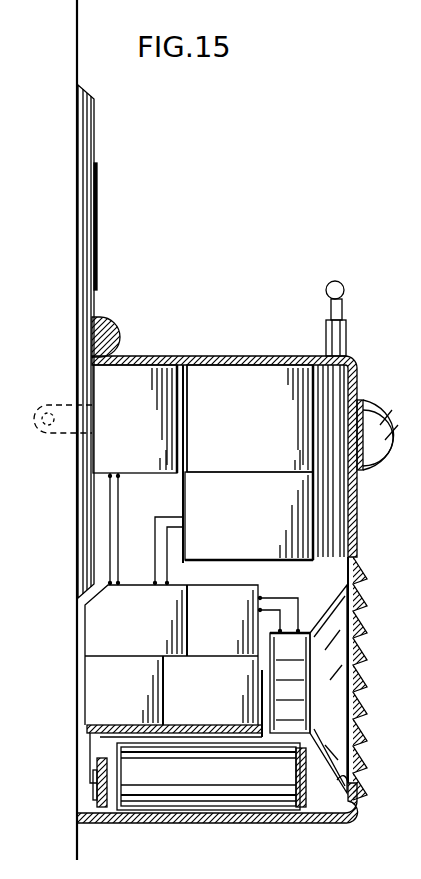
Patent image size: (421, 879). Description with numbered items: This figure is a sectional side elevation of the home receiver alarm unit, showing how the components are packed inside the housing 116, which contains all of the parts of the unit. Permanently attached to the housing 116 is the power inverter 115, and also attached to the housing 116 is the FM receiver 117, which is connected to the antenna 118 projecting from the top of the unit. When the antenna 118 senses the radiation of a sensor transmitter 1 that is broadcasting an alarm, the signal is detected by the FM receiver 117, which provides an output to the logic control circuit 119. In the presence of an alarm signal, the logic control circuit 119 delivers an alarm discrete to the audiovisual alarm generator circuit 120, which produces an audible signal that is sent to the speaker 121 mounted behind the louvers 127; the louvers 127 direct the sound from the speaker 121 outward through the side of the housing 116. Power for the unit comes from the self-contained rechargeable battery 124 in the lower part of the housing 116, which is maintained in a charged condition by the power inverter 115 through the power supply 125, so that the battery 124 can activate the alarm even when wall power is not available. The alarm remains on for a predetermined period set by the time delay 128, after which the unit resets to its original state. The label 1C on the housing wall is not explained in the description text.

The housing 1C is at (185, 353).
The component block 115 is at (123, 380).
The component block 116 is at (200, 353).
The component block 117 is at (265, 387).
The antenna 118 is at (344, 290).
The support bar 119 is at (300, 530).
The circuit block 120 is at (97, 628).
The housing bottom corner 121 is at (337, 780).
The battery 124 is at (217, 793).
The mounting plate 125 is at (98, 713).
The reflector 127 is at (363, 622).
The circuit block 128 is at (235, 593).
The lens 1 is at (392, 417).